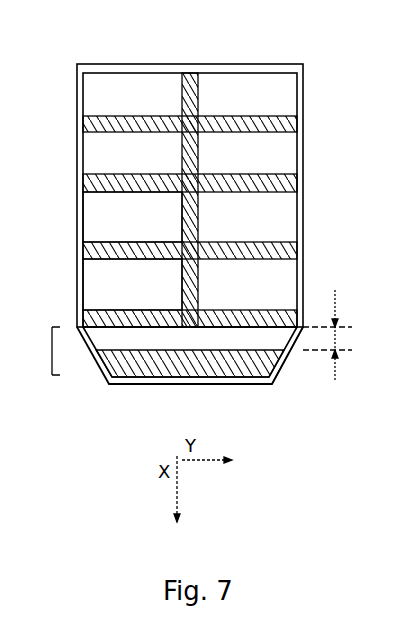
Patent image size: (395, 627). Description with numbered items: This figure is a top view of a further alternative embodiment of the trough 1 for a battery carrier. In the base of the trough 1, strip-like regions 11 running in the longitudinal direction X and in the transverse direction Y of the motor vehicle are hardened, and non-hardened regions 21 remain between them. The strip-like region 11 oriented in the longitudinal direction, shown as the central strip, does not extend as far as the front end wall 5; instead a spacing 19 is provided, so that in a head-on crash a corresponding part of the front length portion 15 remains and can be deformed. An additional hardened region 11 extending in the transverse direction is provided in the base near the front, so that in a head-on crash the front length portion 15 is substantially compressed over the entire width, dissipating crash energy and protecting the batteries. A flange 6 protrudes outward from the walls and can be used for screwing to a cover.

The trough 1 is at (76, 135).
The strip-like hardened region 11 is at (200, 76).
The non-hardened region 21 is at (93, 214).
The front length portion 15 is at (52, 350).
The spacing 19 is at (329, 333).
The flange 6 is at (190, 385).
The end wall 5 is at (263, 385).